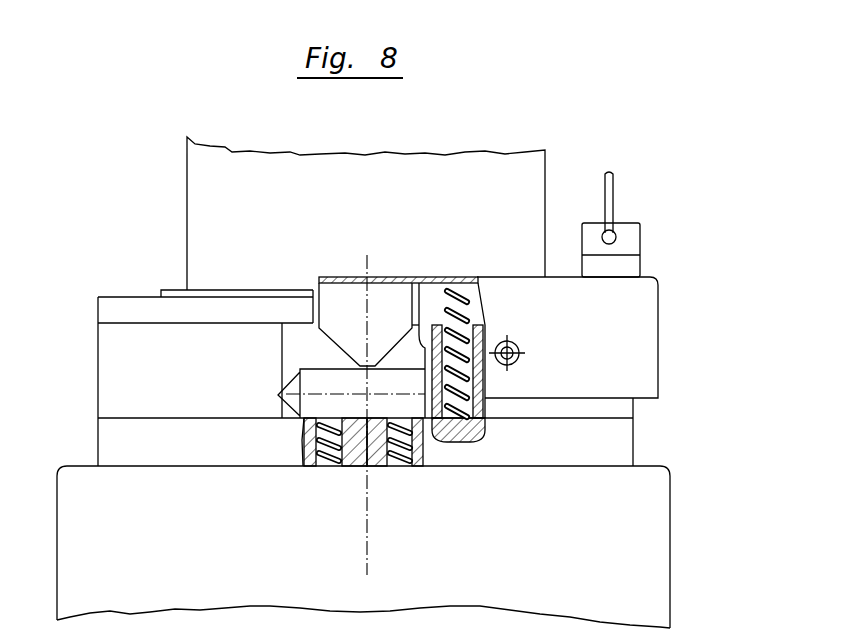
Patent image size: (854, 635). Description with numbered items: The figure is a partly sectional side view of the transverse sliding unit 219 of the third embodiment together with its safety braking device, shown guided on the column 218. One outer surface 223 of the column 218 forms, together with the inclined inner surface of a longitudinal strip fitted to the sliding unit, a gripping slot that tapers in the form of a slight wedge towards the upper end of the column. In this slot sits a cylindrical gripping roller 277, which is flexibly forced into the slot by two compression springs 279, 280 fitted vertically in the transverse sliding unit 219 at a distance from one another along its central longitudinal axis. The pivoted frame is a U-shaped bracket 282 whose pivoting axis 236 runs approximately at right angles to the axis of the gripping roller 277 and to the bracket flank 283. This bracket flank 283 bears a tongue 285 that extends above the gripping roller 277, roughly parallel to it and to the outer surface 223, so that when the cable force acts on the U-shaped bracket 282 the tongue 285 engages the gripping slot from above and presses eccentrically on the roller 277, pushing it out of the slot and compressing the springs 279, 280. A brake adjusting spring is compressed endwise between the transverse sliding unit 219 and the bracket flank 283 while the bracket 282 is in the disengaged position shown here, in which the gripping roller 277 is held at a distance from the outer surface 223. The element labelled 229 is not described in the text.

The column 218 is at (530, 175).
The outer surface 223 is at (348, 197).
The sensor / connector 229 is at (612, 202).
The U-shaped bracket 282 is at (630, 324).
The bracket flank 283 is at (385, 277).
The tongue 285 is at (357, 320).
The pivoting axis 236 is at (515, 343).
The cylindrical gripping roller 277 is at (317, 377).
The compression spring 279 is at (315, 467).
The compression spring 280 is at (408, 467).
The transverse sliding unit 219 is at (652, 551).